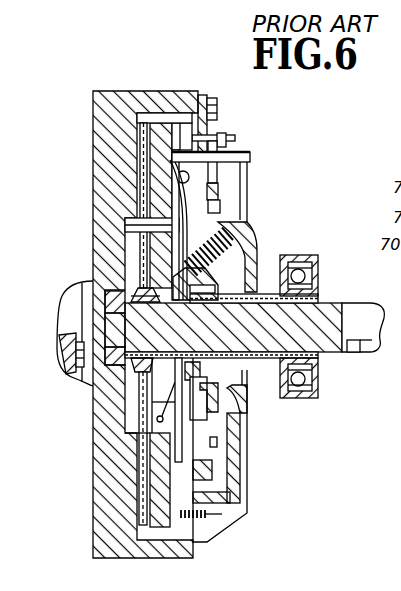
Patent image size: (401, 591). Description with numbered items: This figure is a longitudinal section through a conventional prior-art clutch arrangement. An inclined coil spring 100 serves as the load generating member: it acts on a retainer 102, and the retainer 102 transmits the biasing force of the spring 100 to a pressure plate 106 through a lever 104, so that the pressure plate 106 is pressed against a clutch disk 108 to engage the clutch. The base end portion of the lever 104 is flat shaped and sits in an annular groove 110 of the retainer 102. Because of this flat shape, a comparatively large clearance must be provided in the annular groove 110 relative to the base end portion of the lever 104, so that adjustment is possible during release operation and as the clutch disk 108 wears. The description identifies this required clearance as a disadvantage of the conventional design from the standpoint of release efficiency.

The inclined coil spring 100 is at (249, 254).
The retainer 102 is at (243, 392).
The lever 104 is at (173, 242).
The pressure plate 106 is at (230, 159).
The clutch disk 108 is at (147, 127).
The annular groove 110 is at (177, 266).